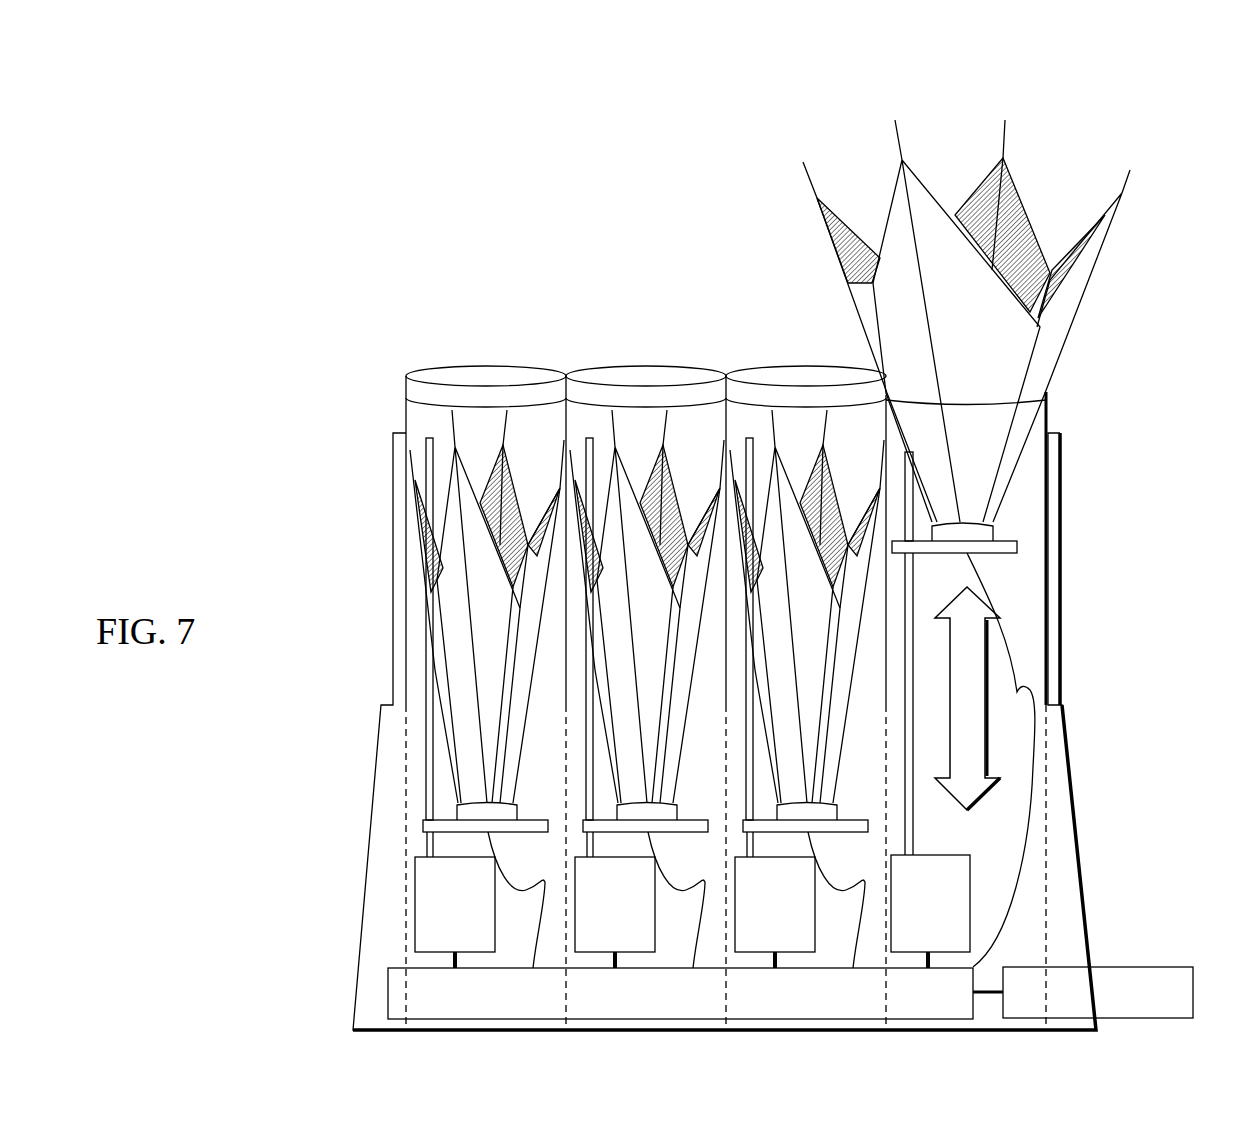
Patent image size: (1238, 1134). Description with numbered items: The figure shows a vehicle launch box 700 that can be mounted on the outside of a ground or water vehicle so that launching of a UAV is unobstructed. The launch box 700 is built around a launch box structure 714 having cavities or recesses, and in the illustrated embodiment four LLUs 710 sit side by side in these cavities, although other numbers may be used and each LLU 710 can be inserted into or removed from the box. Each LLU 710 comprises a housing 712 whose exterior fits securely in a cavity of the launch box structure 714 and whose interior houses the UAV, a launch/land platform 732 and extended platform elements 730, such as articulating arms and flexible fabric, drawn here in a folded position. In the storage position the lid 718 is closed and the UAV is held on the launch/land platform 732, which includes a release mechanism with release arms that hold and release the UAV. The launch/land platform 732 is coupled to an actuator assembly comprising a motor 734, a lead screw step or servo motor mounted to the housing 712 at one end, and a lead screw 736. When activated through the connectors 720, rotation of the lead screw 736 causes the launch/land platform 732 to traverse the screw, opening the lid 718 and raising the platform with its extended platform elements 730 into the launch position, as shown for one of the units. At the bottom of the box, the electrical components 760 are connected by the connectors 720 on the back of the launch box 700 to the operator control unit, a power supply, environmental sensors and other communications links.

The launch box 700 is at (288, 236).
The LLU 710 is at (482, 314).
The housing 712 is at (403, 413).
The launch box structure 714 is at (1083, 832).
The lid 718 is at (452, 367).
The connectors 720 is at (1083, 992).
The extended platform elements 730 is at (417, 537).
The launch/land platform 732 is at (440, 827).
The motor 734 is at (692, 911).
The lead screw 736 is at (430, 843).
The electrical components 760 is at (680, 993).